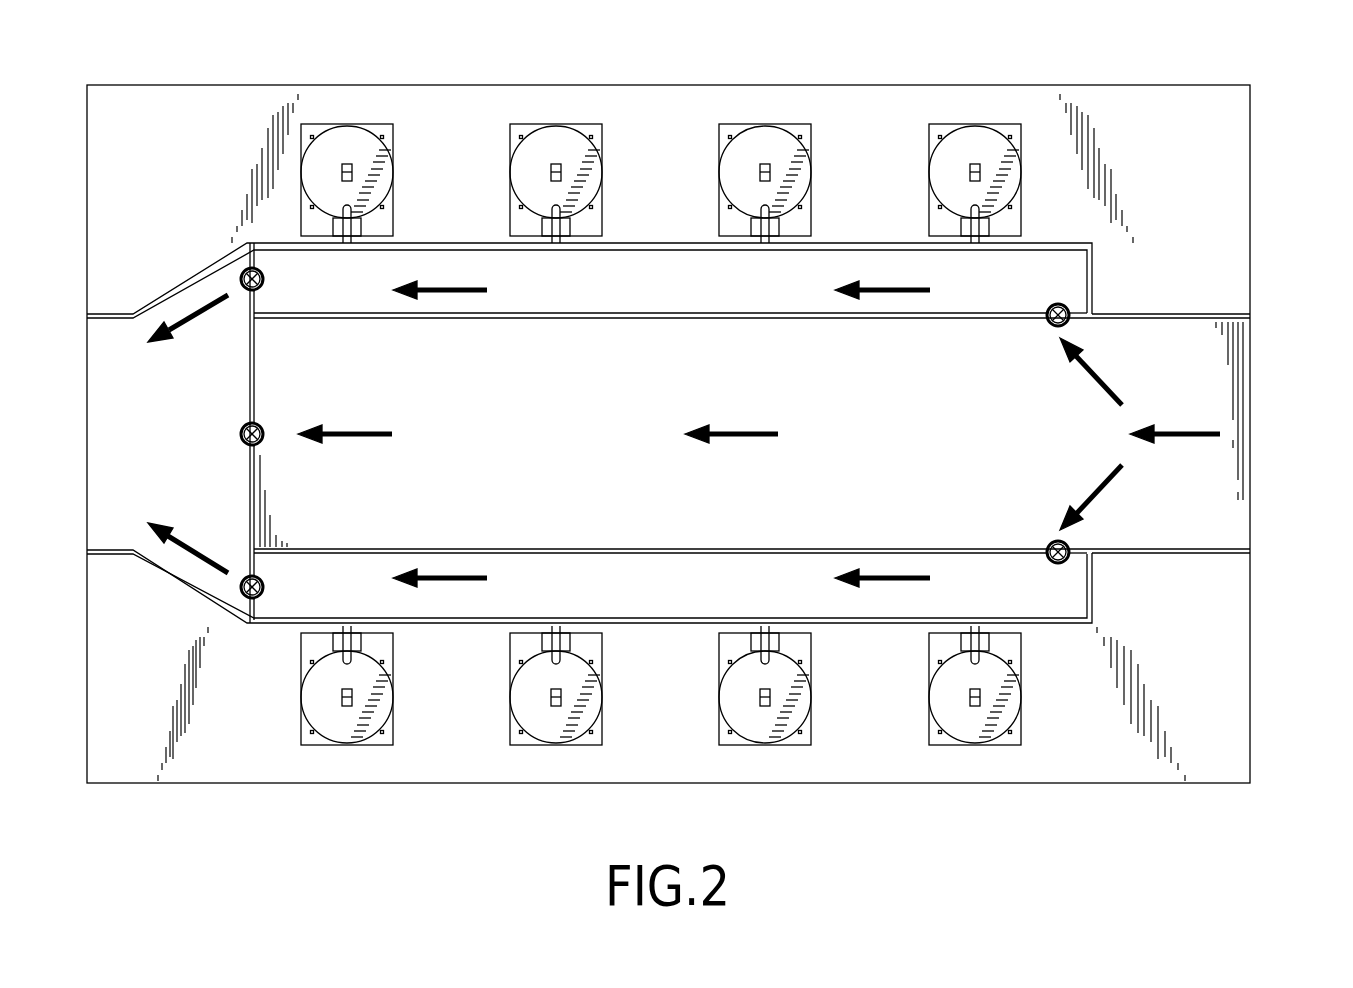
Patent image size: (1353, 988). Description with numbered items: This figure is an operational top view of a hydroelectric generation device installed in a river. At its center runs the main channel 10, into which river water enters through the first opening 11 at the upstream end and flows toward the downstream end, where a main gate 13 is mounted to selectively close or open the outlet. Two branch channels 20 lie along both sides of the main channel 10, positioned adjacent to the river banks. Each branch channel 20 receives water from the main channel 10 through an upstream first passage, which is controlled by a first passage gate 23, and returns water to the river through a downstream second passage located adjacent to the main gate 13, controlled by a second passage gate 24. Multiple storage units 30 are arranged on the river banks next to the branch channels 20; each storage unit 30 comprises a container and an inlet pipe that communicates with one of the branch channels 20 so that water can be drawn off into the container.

The main channel 10 is at (1268, 506).
The first opening 11 is at (1235, 394).
The main gate 13 is at (254, 383).
The branch channel 20 is at (1112, 270).
The first passage gate 23 is at (1050, 305).
The second passage gate 24 is at (248, 263).
The storage unit 30 is at (976, 108).